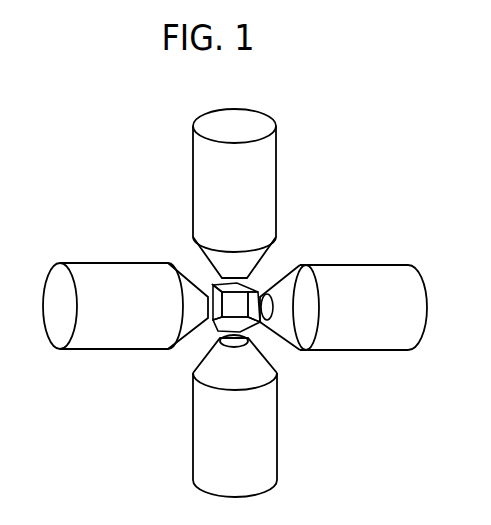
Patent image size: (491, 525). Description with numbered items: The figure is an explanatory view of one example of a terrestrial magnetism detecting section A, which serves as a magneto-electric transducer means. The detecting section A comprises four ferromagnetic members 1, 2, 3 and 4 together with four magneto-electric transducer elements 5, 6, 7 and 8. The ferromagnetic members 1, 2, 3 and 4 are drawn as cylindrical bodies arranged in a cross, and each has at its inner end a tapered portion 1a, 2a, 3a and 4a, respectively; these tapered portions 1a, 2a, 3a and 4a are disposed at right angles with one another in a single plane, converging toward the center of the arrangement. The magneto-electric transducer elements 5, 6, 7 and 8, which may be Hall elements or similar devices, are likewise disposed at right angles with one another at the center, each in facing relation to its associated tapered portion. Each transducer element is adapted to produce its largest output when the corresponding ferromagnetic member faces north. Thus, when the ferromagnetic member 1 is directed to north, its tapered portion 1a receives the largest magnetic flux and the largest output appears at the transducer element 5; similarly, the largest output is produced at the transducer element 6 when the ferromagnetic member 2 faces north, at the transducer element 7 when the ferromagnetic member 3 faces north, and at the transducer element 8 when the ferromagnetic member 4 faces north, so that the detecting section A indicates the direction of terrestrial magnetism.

The terrestrial magnetism detecting section A is at (185, 202).
The ferromagnetic member 1 is at (233, 193).
The tapered portion 1a is at (222, 259).
The ferromagnetic member 2 is at (343, 281).
The tapered portion 2a is at (296, 283).
The ferromagnetic member 3 is at (233, 416).
The tapered portion 3a is at (222, 376).
The ferromagnetic member 4 is at (125, 308).
The tapered portion 4a is at (187, 289).
The magneto-electric transducer element 5 is at (244, 284).
The magneto-electric transducer element 6 is at (262, 330).
The magneto-electric transducer element 7 is at (230, 330).
The magneto-electric transducer element 8 is at (241, 299).